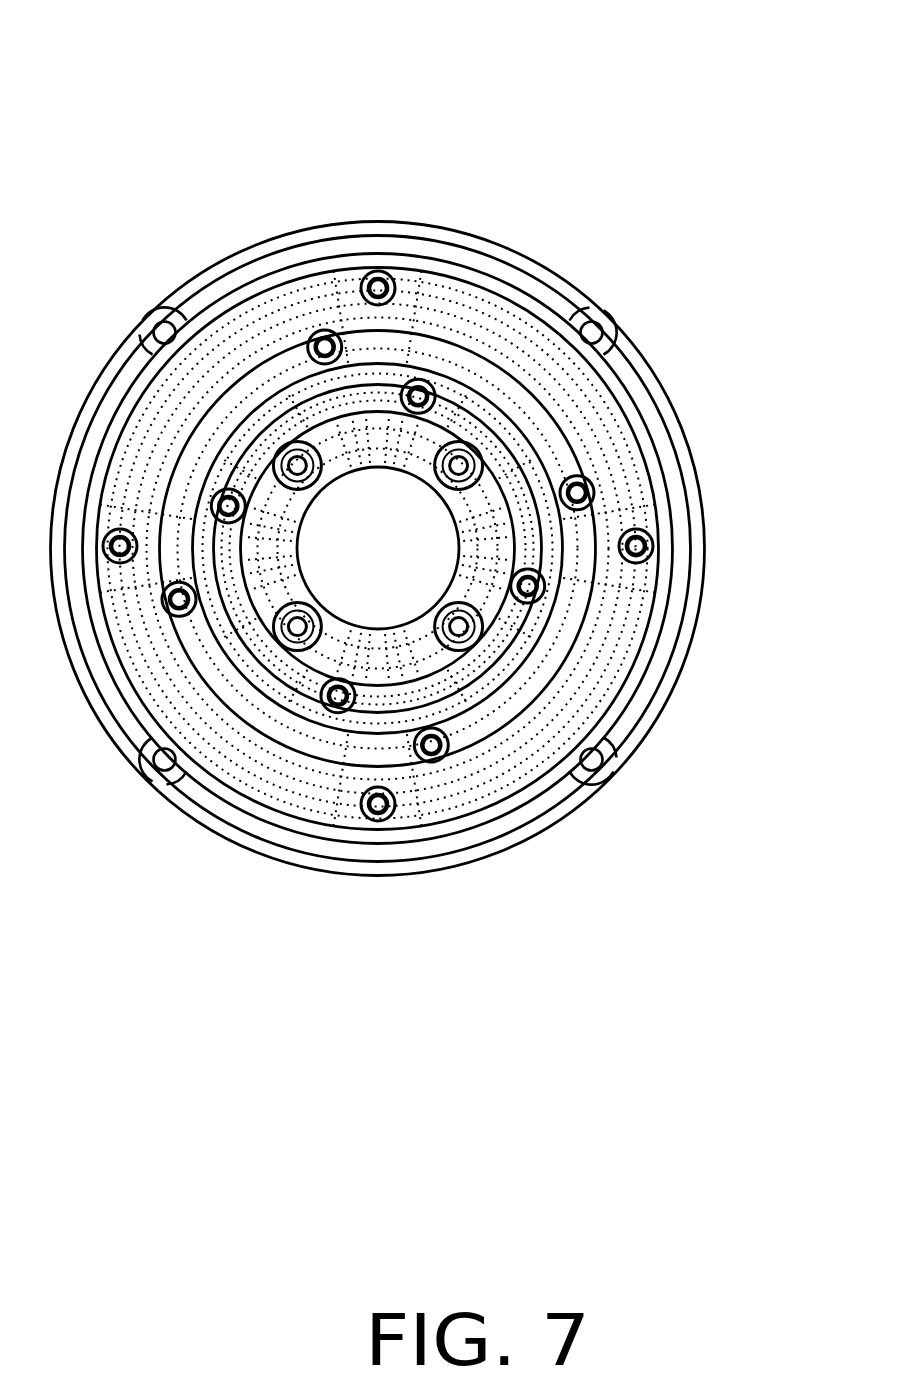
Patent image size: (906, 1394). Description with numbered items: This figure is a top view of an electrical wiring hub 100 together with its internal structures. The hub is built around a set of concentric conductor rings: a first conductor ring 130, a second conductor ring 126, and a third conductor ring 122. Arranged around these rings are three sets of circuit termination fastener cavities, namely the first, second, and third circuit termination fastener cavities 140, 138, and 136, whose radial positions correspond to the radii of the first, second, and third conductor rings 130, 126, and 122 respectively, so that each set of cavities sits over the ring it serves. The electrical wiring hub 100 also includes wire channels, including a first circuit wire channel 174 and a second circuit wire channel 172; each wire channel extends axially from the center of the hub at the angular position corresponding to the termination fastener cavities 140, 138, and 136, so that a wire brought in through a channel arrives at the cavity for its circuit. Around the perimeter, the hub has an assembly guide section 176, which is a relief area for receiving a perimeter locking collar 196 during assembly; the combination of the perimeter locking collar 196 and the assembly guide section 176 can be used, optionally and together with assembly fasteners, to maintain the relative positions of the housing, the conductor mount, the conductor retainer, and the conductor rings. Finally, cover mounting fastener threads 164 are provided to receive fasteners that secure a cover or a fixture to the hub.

The electrical wiring hub 100 is at (288, 78).
The third conductor ring 122 is at (612, 645).
The second conductor ring 126 is at (578, 570).
The first conductor ring 130 is at (275, 663).
The third circuit termination fastener cavities 136 is at (533, 327).
The second circuit termination fastener cavities 138 is at (436, 392).
The first circuit termination fastener cavities 140 is at (343, 348).
The cover mounting fastener threads 164 is at (606, 310).
The second circuit wire channel 172 is at (447, 807).
The first circuit wire channel 174 is at (300, 813).
The assembly guide section 176 is at (523, 792).
The perimeter locking collar 196 is at (612, 348).